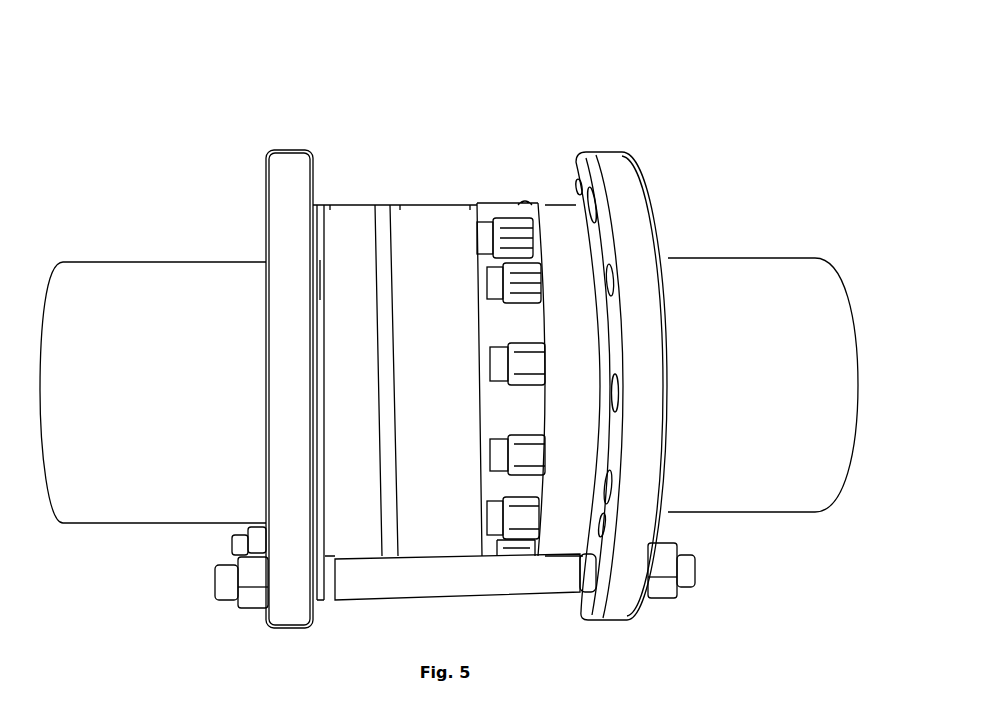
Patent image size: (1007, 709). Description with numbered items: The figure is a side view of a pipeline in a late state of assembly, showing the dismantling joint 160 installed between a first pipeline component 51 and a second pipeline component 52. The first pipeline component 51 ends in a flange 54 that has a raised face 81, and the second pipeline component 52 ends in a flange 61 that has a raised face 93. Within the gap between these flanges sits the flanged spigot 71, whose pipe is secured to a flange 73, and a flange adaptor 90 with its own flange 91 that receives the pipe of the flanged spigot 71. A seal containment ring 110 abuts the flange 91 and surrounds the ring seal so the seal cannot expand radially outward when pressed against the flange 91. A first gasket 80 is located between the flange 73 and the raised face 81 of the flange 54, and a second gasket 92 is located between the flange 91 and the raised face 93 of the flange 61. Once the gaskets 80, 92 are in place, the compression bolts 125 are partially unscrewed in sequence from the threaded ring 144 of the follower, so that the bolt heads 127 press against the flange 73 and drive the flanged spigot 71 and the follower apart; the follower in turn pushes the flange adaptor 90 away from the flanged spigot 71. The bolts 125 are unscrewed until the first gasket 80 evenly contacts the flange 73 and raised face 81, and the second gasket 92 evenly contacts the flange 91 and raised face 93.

The first pipeline component 51 is at (763, 255).
The second pipeline component 52 is at (105, 258).
The flange 54 is at (604, 153).
The flange 61 is at (291, 150).
The flanged spigot 71 is at (531, 197).
The flange 73 is at (569, 380).
The first gasket 80 is at (573, 165).
The raised face 81 is at (597, 248).
The flange adaptor 90 is at (345, 197).
The flange 91 is at (346, 380).
The second gasket 92 is at (323, 205).
The raised face 93 is at (322, 274).
The seal containment ring 110 is at (375, 206).
The compression bolts 125 is at (503, 216).
The bolt heads 127 is at (518, 238).
The threaded ring 144 is at (435, 283).
The dismantling joint 160 is at (428, 148).